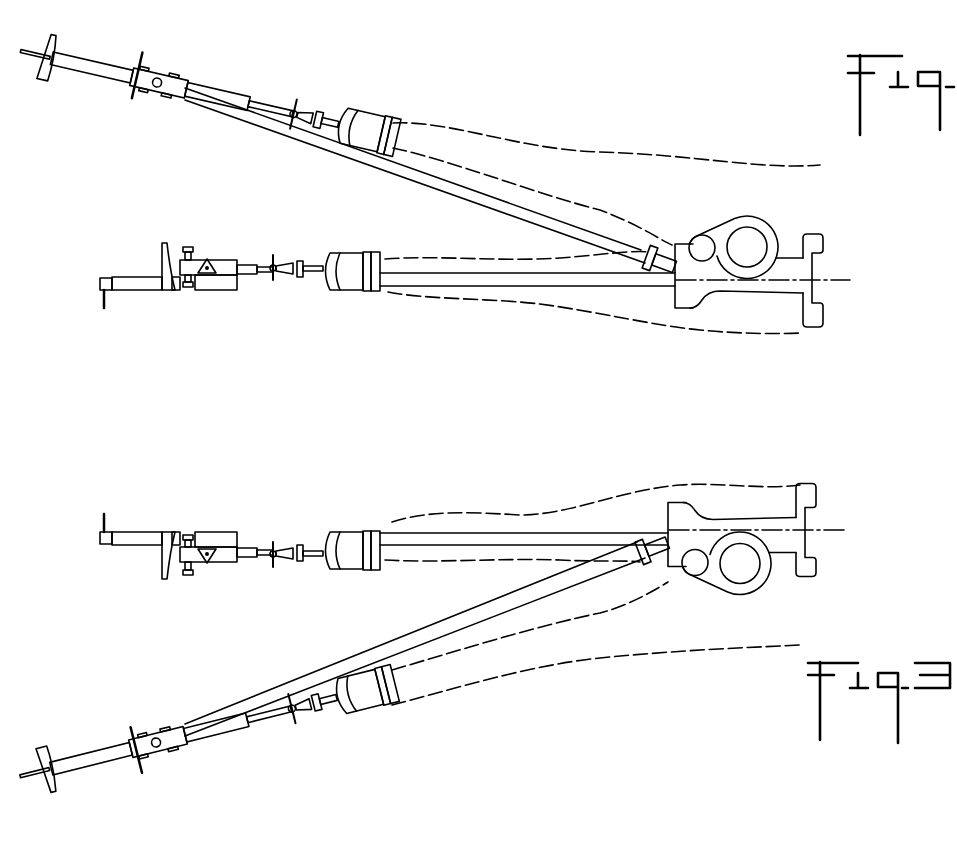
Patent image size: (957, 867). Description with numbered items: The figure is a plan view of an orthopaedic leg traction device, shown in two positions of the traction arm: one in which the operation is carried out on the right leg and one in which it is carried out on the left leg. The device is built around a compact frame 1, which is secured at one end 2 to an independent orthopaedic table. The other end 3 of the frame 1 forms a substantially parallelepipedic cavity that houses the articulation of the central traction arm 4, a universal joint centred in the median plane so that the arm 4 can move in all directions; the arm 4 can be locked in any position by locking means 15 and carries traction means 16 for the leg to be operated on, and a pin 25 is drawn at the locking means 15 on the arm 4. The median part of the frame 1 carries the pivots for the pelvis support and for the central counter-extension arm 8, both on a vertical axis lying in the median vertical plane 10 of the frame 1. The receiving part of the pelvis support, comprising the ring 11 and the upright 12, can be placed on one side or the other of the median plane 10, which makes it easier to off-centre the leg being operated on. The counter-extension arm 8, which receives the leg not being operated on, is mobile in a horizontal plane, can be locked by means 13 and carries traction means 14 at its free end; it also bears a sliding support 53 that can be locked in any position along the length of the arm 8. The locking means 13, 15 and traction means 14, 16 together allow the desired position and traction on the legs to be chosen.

In FIG. 2, the compact frame 1 is at (753, 285).
In FIG. 2, the end of the frame 2 is at (817, 238).
In FIG. 3, the end of the frame 2 is at (808, 491).
In FIG. 2, the end of the frame forming a parallelepipedic cavity 3 is at (679, 297).
In FIG. 2, the central traction arm 4 is at (431, 194).
In FIG. 3, the central traction arm 4 is at (406, 631).
In FIG. 2, the central counter-extension arm 8 is at (493, 265).
In FIG. 2, the median vertical plane 10 is at (835, 277).
In FIG. 2, the ring 11 is at (766, 226).
In FIG. 3, the ring 11 is at (741, 594).
In FIG. 2, the upright 12 is at (702, 237).
In FIG. 3, the upright 12 is at (694, 572).
In FIG. 2, the locking means 13 is at (117, 305).
In FIG. 3, the locking means 13 is at (88, 521).
In FIG. 2, the traction means 14 is at (187, 237).
In FIG. 3, the traction means 14 is at (216, 575).
In FIG. 2, the locking means 15 is at (192, 70).
In FIG. 3, the locking means 15 is at (180, 762).
In FIG. 2, the traction means 16 is at (53, 88).
In FIG. 3, the traction means 16 is at (56, 733).
In FIG. 2, the pin 25 is at (147, 55).
In FIG. 3, the pin 25 is at (142, 766).
In FIG. 2, the sliding support 53 is at (222, 291).
In FIG. 3, the sliding support 53 is at (222, 531).